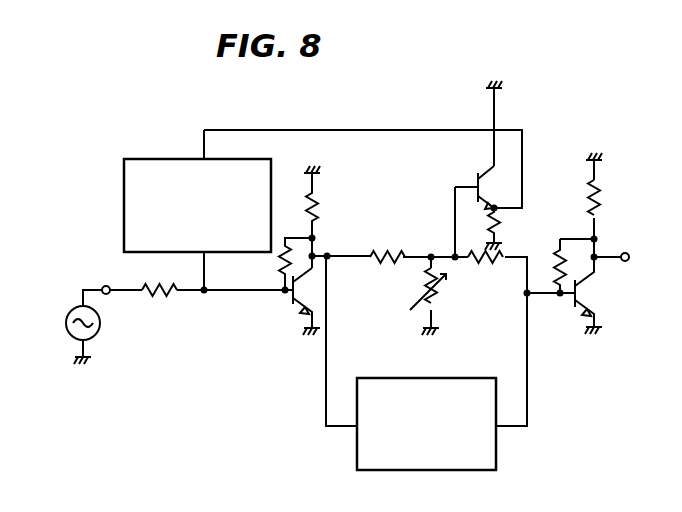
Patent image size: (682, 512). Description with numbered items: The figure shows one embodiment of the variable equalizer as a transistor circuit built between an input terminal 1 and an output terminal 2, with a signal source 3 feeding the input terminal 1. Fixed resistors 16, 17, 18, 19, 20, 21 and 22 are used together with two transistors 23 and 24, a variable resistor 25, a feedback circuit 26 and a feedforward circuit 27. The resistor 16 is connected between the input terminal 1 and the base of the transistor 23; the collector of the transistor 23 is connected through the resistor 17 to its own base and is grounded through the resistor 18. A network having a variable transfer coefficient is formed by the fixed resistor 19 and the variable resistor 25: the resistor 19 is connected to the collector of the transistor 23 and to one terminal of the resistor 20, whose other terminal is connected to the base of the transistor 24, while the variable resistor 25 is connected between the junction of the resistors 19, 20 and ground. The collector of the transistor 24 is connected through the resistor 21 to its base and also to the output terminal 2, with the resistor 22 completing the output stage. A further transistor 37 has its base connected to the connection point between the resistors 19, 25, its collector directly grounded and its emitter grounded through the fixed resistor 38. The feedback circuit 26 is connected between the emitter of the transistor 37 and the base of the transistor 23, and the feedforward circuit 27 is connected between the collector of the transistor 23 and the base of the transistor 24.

The input terminal 1 is at (106, 285).
The output terminal 2 is at (637, 252).
The signal source 3 is at (68, 316).
The fixed resistor 16 is at (156, 301).
The fixed resistor 17 is at (280, 264).
The fixed resistor 18 is at (317, 200).
The fixed resistor 19 is at (373, 252).
The fixed resistor 20 is at (494, 264).
The fixed resistor 21 is at (556, 266).
The fixed resistor 22 is at (598, 190).
The transistor 23 is at (297, 308).
The transistor 24 is at (589, 285).
The variable resistor 25 is at (444, 294).
The feedback circuit 26 is at (182, 158).
The feedforward circuit 27 is at (472, 378).
The transistor 37 is at (494, 182).
The fixed resistor 38 is at (500, 222).